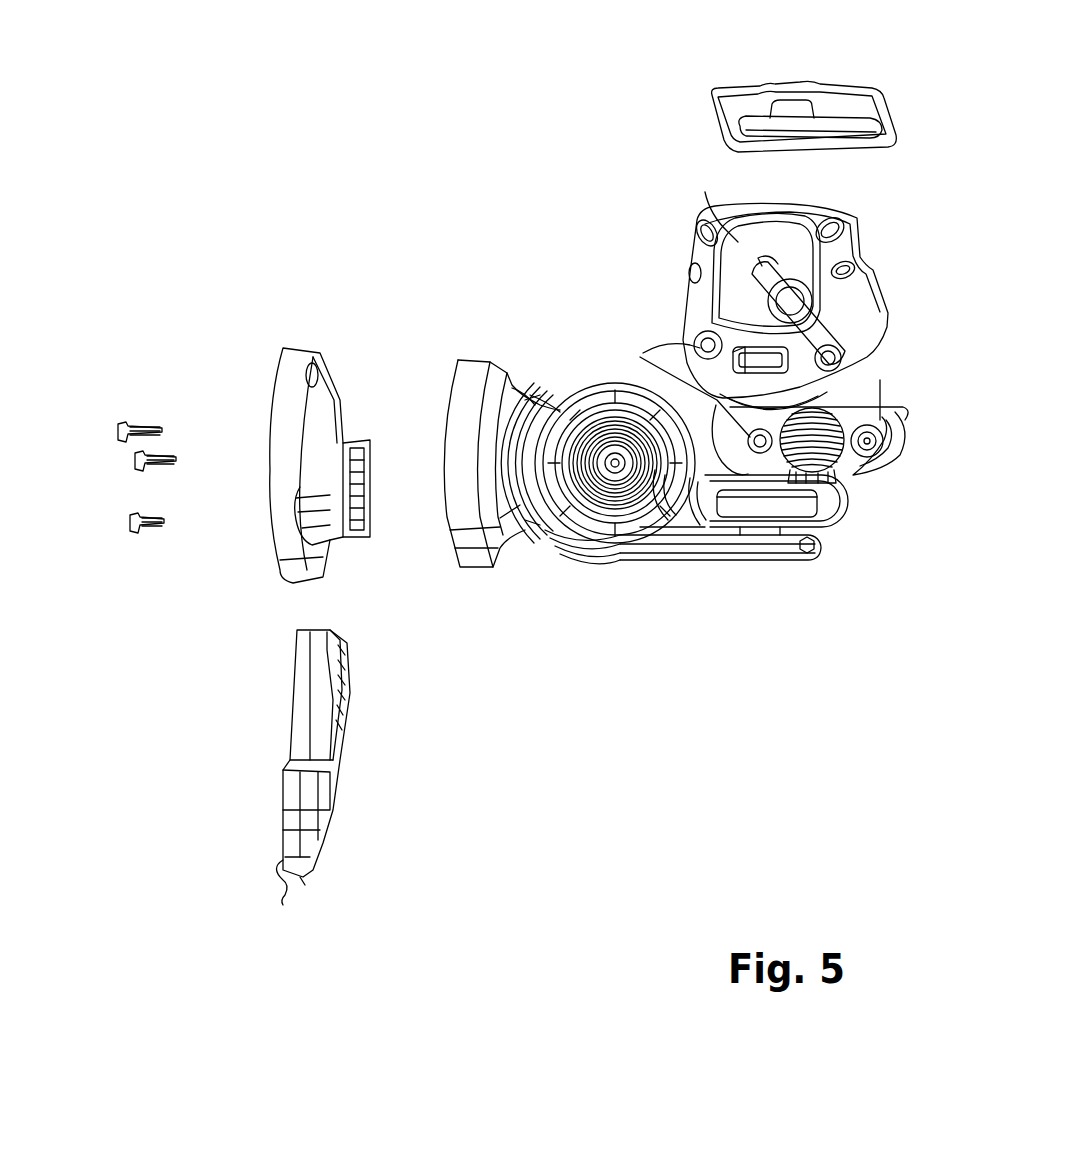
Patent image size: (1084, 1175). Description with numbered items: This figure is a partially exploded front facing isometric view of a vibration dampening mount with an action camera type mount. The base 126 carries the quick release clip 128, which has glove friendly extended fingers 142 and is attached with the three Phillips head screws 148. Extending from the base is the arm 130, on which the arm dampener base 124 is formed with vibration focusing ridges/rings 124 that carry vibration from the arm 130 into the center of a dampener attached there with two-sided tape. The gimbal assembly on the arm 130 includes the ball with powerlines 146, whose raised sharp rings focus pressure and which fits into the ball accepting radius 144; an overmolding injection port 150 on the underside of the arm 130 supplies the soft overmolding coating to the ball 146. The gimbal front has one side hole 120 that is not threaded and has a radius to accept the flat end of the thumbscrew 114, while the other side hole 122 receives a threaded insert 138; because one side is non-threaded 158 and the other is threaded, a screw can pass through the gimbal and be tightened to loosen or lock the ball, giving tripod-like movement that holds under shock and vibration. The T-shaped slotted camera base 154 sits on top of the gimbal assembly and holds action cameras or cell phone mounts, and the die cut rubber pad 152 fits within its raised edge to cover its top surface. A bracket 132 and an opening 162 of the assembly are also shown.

The thumbscrew 114 is at (834, 352).
The side hole 120 is at (675, 432).
The other side hole 122 is at (867, 364).
The arm dampener base 124 is at (612, 466).
The base 126 is at (300, 346).
The quick release clip 128 is at (300, 655).
The arm 130 is at (657, 547).
The bracket 132 is at (470, 358).
The threaded insert 138 is at (704, 336).
The extended fingers 142 is at (300, 878).
The ball accepting radius 144 is at (777, 395).
The ball with powerlines 146 is at (824, 448).
The Phillips head screws 148 is at (123, 518).
The overmolding injection port 150 is at (804, 558).
The rubber pad 152 is at (746, 88).
The T-shaped slotted camera base 154 is at (880, 287).
The non-threaded hole 158 is at (753, 455).
The opening 162 is at (713, 203).